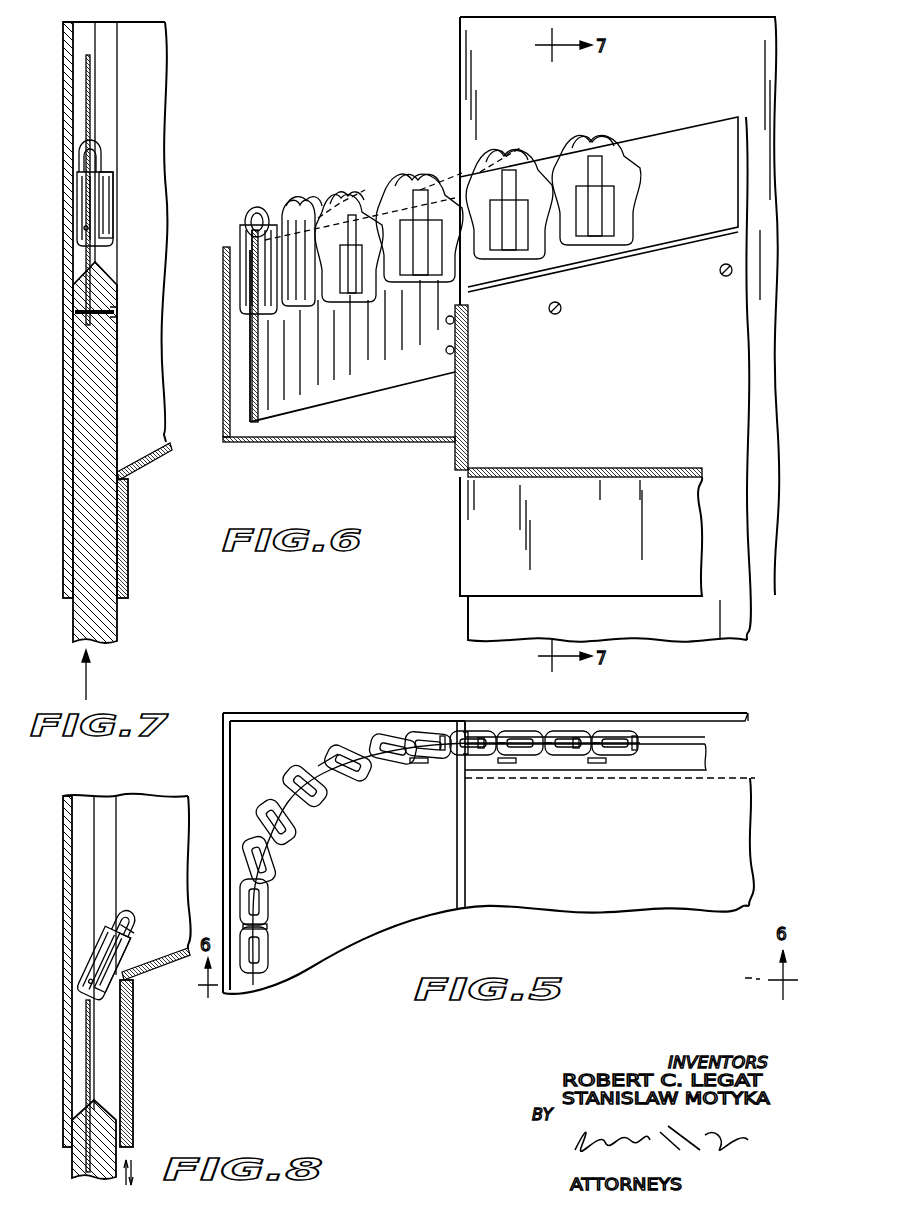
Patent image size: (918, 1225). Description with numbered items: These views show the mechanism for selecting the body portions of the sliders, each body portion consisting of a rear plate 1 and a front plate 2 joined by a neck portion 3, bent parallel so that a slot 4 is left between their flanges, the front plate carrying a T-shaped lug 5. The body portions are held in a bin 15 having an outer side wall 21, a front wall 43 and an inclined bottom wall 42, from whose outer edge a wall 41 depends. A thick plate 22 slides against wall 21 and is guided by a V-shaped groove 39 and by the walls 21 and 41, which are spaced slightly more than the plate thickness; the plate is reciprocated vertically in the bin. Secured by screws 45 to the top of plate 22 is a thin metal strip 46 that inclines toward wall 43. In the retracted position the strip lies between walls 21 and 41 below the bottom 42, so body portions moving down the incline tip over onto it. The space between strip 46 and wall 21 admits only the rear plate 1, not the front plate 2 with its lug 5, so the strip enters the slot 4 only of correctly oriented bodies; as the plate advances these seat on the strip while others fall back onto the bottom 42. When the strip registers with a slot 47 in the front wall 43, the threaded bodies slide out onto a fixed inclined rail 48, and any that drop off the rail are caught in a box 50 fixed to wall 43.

In FIG. 7, the rear plate 1 is at (74, 184).
In FIG. 8, the rear plate 1 is at (128, 944).
In FIG. 6, the rear plate 1 is at (440, 224).
In FIG. 5, the rear plate 1 is at (410, 732).
In FIG. 7, the front plate 2 is at (103, 162).
In FIG. 8, the front plate 2 is at (112, 918).
In FIG. 6, the front plate 2 is at (364, 200).
In FIG. 5, the front plate 2 is at (568, 760).
In FIG. 8, the neck portion 3 is at (130, 914).
In FIG. 6, the neck portion 3 is at (346, 204).
In FIG. 5, the neck portion 3 is at (490, 738).
In FIG. 7, the slot 4 is at (85, 228).
In FIG. 8, the slot 4 is at (112, 980).
In FIG. 5, the slot 4 is at (474, 738).
In FIG. 7, the lug 5 is at (112, 172).
In FIG. 8, the lug 5 is at (88, 950).
In FIG. 6, the lug 5 is at (418, 262).
In FIG. 5, the lug 5 is at (426, 764).
In FIG. 7, the bin 15 is at (152, 378).
In FIG. 8, the bin 15 is at (151, 792).
In FIG. 6, the bin 15 is at (453, 457).
In FIG. 5, the bin 15 is at (548, 708).
In FIG. 7, the outer side wall 21 is at (66, 308).
In FIG. 8, the outer side wall 21 is at (67, 1104).
In FIG. 6, the outer side wall 21 is at (760, 618).
In FIG. 5, the outer side wall 21 is at (730, 720).
In FIG. 7, the plate 22 is at (76, 384).
In FIG. 8, the plate 22 is at (76, 1171).
In FIG. 6, the plate 22 is at (470, 619).
In FIG. 5, the plate 22 is at (710, 758).
In FIG. 7, the V-shaped groove 39 is at (113, 38).
In FIG. 8, the V-shaped groove 39 is at (101, 806).
In FIG. 7, the wall 41 is at (125, 558).
In FIG. 8, the wall 41 is at (132, 1053).
In FIG. 6, the wall 41 is at (463, 527).
In FIG. 7, the inclined bottom wall 42 is at (155, 460).
In FIG. 8, the inclined bottom wall 42 is at (178, 966).
In FIG. 6, the inclined bottom wall 42 is at (568, 470).
In FIG. 5, the inclined bottom wall 42 is at (698, 782).
In FIG. 6, the front wall 43 is at (467, 340).
In FIG. 5, the front wall 43 is at (468, 806).
In FIG. 7, the screws 45 is at (112, 308).
In FIG. 6, the screws 45 is at (560, 304).
In FIG. 7, the strip 46 is at (91, 78).
In FIG. 8, the strip 46 is at (86, 1042).
In FIG. 6, the strip 46 is at (690, 135).
In FIG. 5, the strip 46 is at (658, 740).
In FIG. 6, the slot 47 is at (466, 186).
In FIG. 5, the slot 47 is at (465, 728).
In FIG. 6, the fixed inclined rail 48 is at (392, 375).
In FIG. 5, the fixed inclined rail 48 is at (375, 740).
In FIG. 6, the box 50 is at (312, 445).
In FIG. 5, the box 50 is at (325, 688).